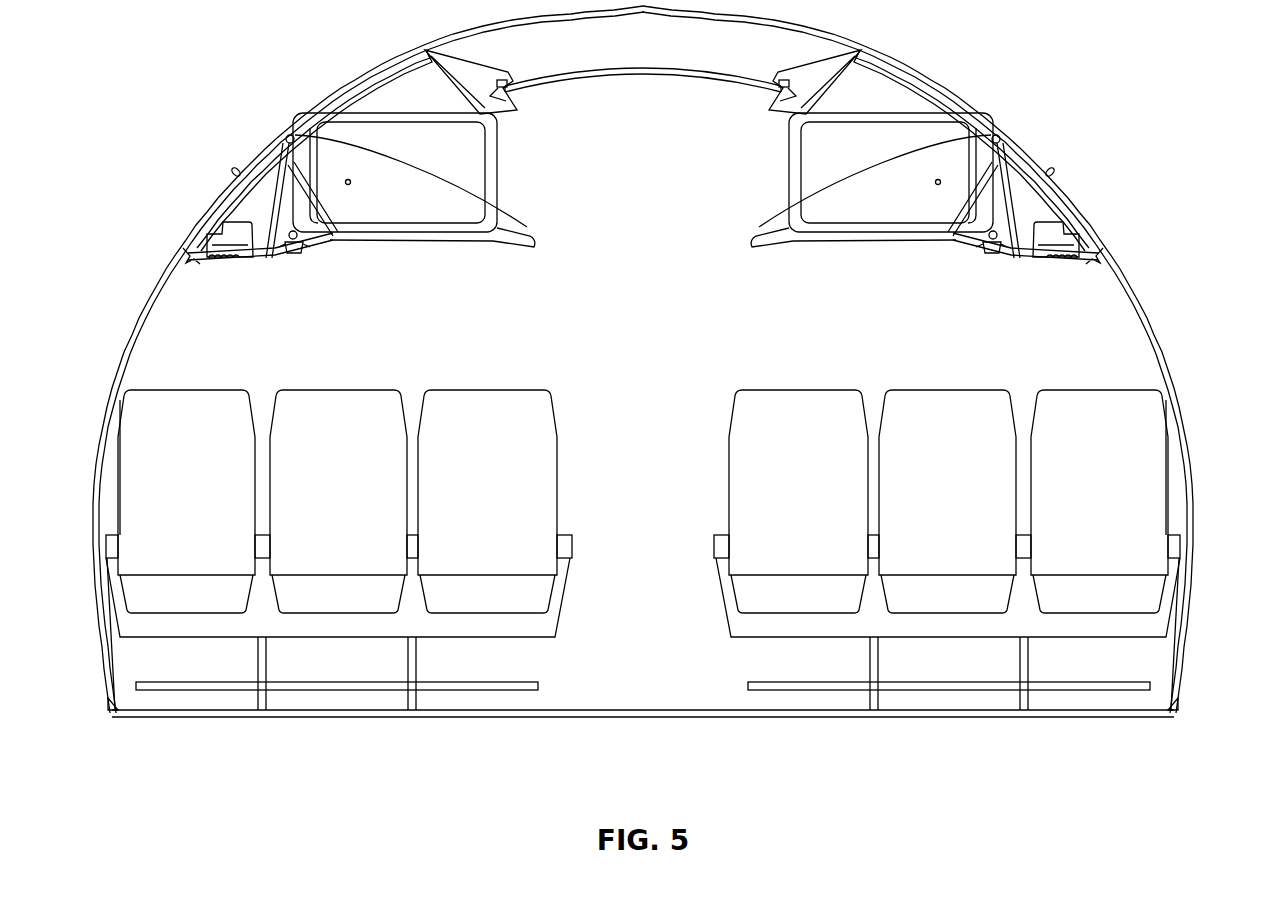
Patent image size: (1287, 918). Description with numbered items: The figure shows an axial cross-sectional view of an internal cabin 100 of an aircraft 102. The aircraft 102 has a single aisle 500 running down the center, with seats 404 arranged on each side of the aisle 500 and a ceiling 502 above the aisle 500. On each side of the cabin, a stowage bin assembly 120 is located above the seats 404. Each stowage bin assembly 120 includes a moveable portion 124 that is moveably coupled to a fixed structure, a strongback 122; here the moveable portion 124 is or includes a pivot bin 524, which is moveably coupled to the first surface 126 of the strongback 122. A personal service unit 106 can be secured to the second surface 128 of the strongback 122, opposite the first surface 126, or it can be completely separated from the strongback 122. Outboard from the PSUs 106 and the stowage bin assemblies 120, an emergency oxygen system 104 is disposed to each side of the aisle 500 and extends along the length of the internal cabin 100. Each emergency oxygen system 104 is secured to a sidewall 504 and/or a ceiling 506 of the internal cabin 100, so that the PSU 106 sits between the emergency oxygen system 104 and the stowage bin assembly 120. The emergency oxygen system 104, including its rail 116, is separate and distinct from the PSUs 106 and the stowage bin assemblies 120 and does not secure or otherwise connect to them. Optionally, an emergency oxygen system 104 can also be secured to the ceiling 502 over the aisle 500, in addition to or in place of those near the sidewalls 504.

The internal cabin 100 is at (1178, 356).
The aircraft 102 is at (1112, 190).
The emergency oxygen system 104 is at (214, 278).
The personal service unit 106 is at (297, 262).
The rail 116 is at (248, 266).
The stowage bin assembly 120 is at (431, 252).
The strongback 122 is at (280, 160).
The moveable portion 124 is at (535, 210).
The first surface 126 is at (287, 135).
The second surface 128 is at (270, 262).
The seats 404 is at (490, 390).
The aisle 500 is at (640, 700).
The ceiling 502 is at (650, 70).
The sidewall 504 is at (186, 256).
The ceiling 506 is at (234, 168).
The pivot bin 524 is at (532, 250).